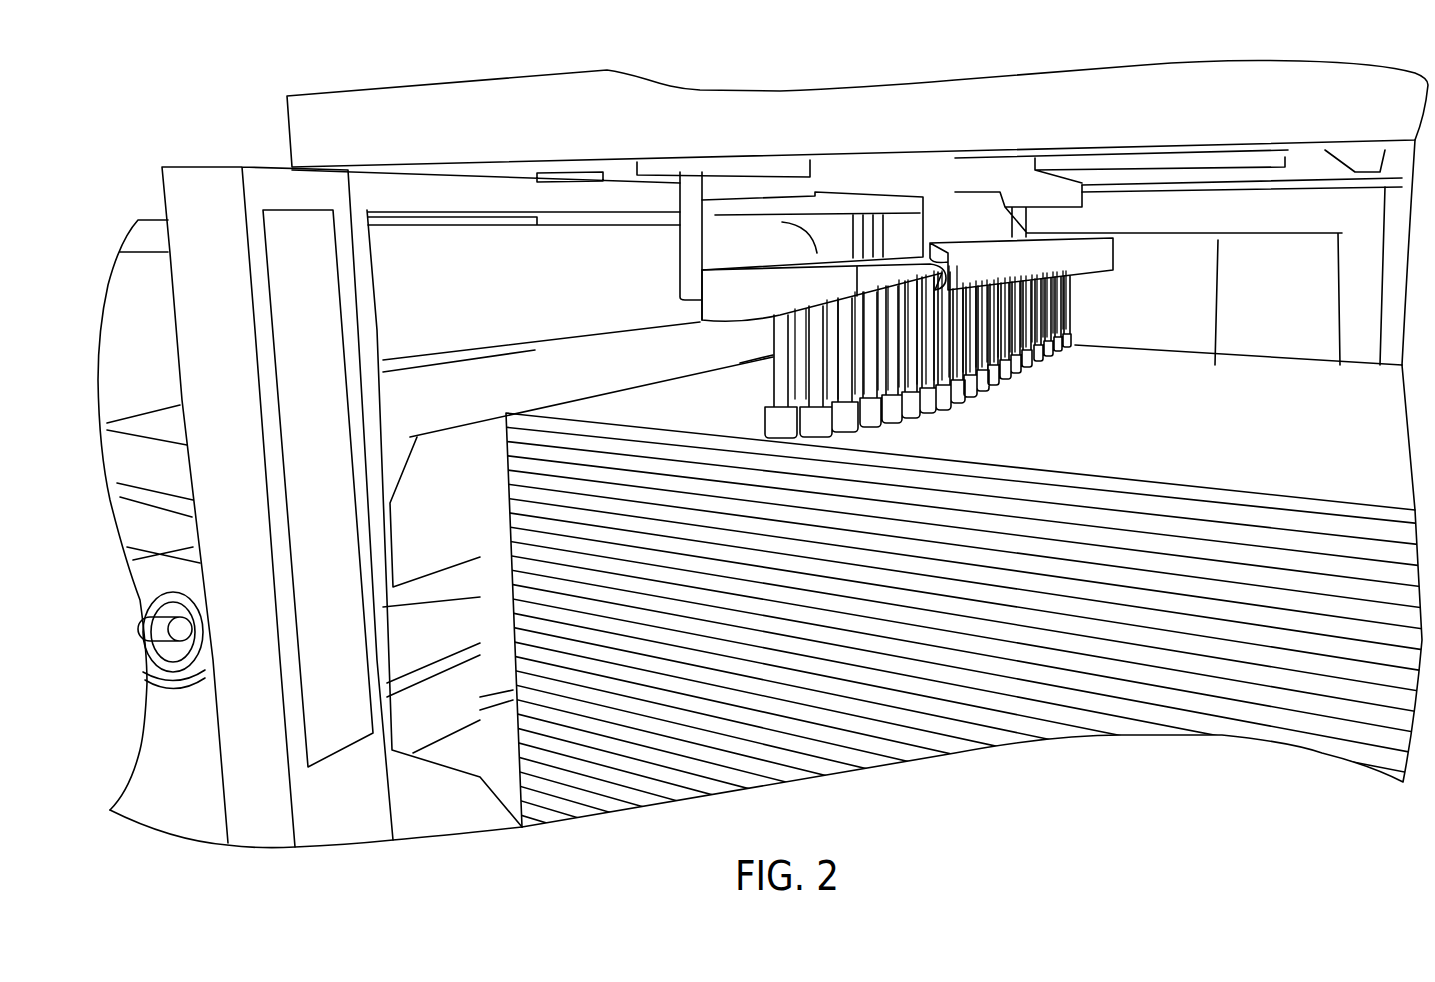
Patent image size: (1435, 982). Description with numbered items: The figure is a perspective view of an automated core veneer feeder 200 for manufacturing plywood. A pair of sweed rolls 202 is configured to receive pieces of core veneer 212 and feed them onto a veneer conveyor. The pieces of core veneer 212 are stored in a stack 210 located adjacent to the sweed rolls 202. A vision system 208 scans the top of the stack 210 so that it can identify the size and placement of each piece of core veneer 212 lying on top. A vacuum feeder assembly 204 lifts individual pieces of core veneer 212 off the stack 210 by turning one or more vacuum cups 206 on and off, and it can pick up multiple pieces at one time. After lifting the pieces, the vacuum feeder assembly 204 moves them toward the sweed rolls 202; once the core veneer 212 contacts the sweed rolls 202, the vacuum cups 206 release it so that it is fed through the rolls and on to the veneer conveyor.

The automated core veneer feeder 200 is at (268, 93).
The sweed rolls 202 is at (524, 305).
The vacuum feeder assembly 204 is at (740, 308).
The vacuum cups 206 is at (781, 432).
The vision system 208 is at (1138, 288).
The stack 210 is at (933, 610).
The core veneer 212 is at (1282, 465).